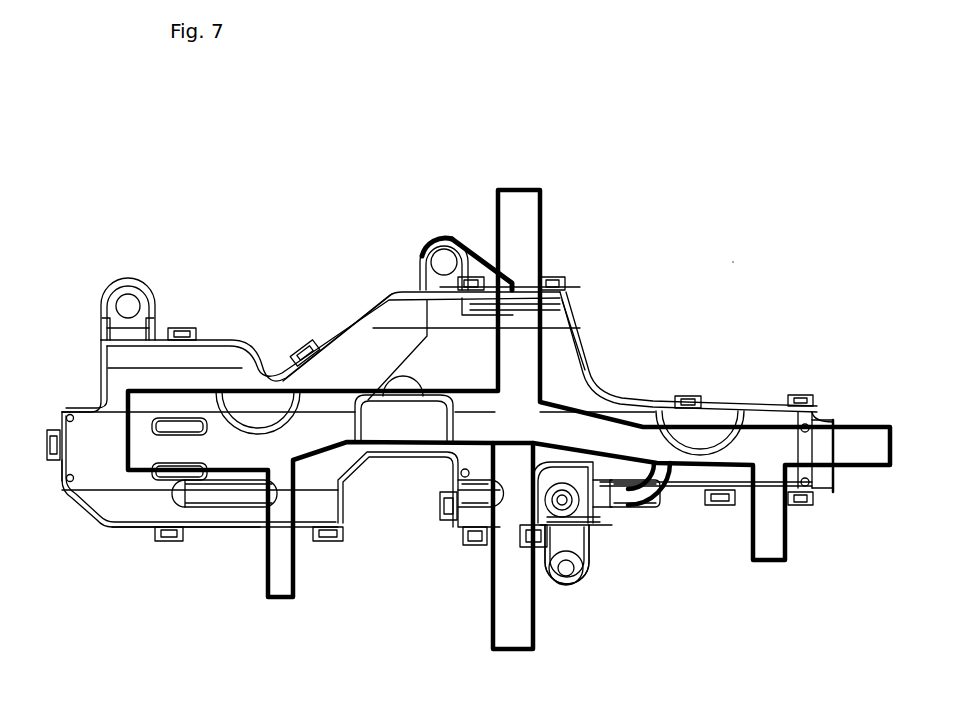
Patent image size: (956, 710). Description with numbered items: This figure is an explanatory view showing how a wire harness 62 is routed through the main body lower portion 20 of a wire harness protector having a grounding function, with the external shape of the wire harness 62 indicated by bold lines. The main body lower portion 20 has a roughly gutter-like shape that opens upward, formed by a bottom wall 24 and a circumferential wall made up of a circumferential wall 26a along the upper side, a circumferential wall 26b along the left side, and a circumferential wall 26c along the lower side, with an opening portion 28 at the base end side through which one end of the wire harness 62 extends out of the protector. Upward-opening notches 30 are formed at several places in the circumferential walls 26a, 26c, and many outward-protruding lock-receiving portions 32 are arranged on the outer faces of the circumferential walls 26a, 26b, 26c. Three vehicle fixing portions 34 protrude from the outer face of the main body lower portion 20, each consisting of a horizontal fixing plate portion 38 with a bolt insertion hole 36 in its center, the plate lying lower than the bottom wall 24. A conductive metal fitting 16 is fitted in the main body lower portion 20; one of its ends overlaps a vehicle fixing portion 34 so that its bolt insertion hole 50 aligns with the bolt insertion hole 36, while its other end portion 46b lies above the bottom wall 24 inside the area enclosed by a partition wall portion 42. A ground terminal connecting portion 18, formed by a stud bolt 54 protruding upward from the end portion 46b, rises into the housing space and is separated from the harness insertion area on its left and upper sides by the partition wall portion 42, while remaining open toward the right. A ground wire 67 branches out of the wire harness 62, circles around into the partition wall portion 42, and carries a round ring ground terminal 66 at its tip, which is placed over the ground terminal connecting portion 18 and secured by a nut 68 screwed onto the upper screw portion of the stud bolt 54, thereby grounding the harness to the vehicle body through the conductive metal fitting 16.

The main body lower portion 20 is at (736, 258).
The bottom wall 24 is at (333, 463).
The circumferential wall 26a is at (352, 333).
The circumferential wall 26b is at (63, 493).
The circumferential wall 26c is at (216, 528).
The opening portion 28 is at (818, 421).
The notches 30 is at (509, 396).
The lock-receiving portions 32 is at (182, 328).
The vehicle fixing portions 34 is at (340, 433).
The bolt insertion hole 36 is at (133, 300).
The fixing plate portion 38 is at (112, 295).
The partition wall portion 42 is at (563, 482).
The bolt insertion hole 50 is at (570, 576).
The wire harness 62 is at (548, 326).
The ground terminal 66 is at (579, 500).
The ground wire 67 is at (656, 482).
The nut 68 is at (555, 510).
The ground terminal connecting portion 18 is at (607, 436).
The stud bolt 54 is at (556, 464).
The conductive metal fitting 16 is at (618, 586).
The end portion 46b is at (585, 567).